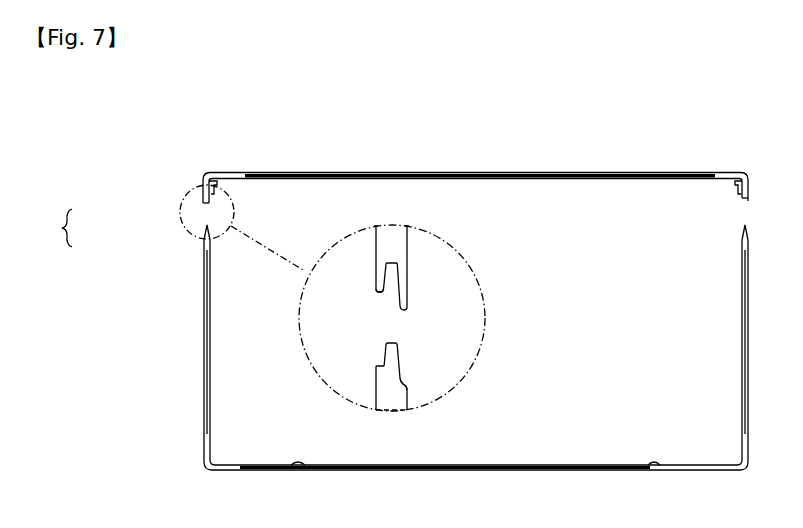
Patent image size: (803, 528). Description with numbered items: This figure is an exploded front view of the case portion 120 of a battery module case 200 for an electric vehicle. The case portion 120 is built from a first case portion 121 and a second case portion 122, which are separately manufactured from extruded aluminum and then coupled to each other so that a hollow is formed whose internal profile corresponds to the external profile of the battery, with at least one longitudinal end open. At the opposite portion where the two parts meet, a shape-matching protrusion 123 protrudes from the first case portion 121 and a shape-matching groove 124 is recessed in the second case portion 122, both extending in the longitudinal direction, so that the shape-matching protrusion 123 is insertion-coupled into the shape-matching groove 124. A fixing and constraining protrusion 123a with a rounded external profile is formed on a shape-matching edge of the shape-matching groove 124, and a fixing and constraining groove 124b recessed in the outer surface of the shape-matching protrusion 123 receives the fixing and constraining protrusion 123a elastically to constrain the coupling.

The battery module case 200 is at (459, 288).
The case portion 120 is at (46, 228).
The first case portion 121 is at (203, 262).
The second case portion 122 is at (203, 183).
The shape-matching protrusion 123 is at (398, 352).
The fixing and constraining protrusion 123a is at (400, 388).
The shape-matching groove 124 is at (387, 262).
The fixing and constraining groove 124b is at (400, 306).